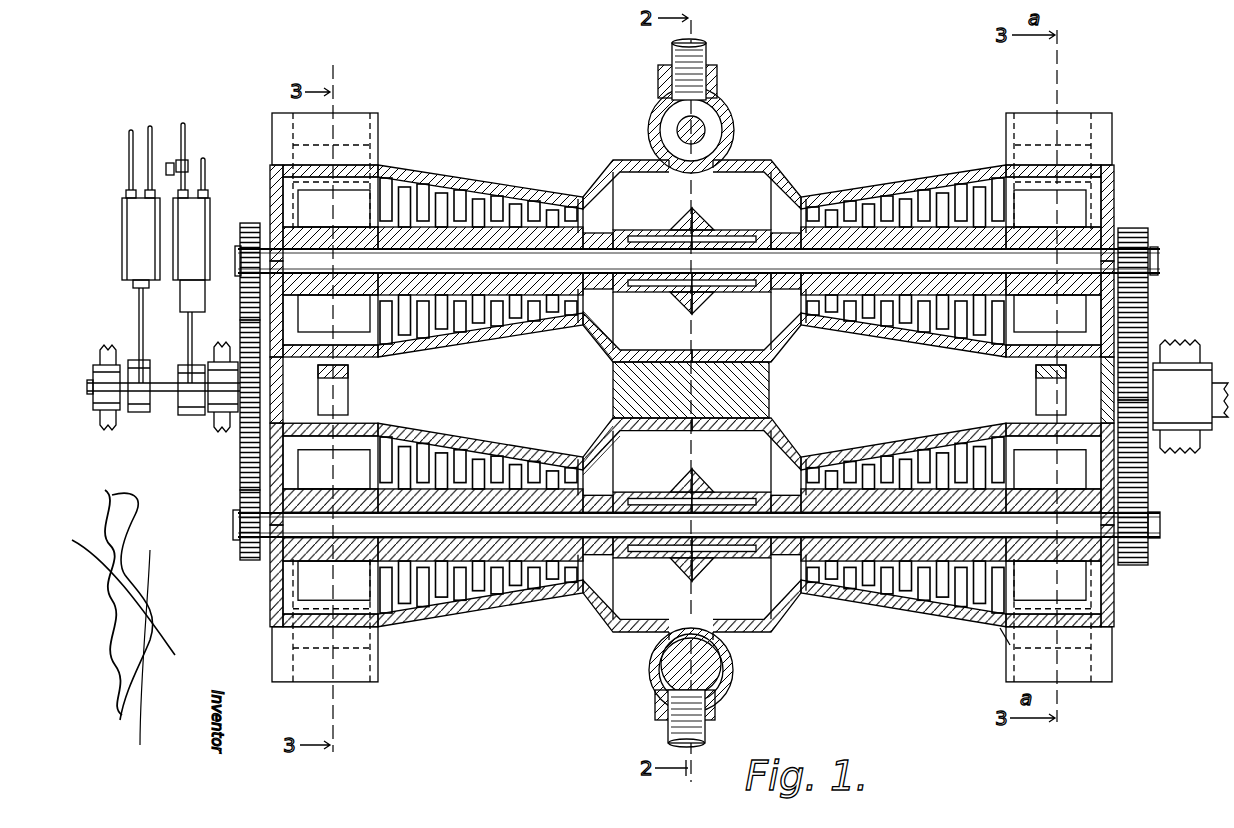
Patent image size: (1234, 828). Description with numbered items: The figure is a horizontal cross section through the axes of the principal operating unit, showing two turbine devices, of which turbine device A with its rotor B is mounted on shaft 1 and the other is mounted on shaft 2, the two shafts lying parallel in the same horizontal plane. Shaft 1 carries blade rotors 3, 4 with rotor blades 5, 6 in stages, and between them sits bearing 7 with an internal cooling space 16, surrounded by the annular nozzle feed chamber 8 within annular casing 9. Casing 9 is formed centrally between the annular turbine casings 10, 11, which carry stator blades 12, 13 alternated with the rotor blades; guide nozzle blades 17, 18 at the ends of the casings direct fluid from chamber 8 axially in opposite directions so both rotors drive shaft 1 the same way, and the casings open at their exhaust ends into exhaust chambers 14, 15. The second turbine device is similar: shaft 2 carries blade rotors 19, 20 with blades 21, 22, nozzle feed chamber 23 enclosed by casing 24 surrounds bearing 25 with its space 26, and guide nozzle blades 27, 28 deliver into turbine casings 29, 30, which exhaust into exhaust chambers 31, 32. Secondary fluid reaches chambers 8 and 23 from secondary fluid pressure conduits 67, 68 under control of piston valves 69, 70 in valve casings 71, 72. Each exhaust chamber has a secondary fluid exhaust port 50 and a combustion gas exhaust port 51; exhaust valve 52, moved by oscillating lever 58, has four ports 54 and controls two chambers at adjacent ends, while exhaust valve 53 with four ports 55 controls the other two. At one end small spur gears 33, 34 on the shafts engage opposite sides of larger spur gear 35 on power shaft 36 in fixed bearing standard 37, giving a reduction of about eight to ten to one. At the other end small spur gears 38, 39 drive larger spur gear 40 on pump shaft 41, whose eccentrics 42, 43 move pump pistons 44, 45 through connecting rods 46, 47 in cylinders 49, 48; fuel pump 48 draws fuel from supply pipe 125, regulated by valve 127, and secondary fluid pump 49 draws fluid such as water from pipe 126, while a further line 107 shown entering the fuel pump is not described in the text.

The shaft 1 is at (239, 258).
The shaft 2 is at (236, 525).
The blade rotor 3 is at (375, 227).
The blade rotor 4 is at (1000, 235).
The rotor blades 5 is at (590, 205).
The rotor blades 6 is at (800, 210).
The bearing 7 is at (700, 225).
The annular nozzle feed chamber 8 is at (692, 275).
The annular casing 9 is at (768, 160).
The annular turbine casing 10 is at (475, 180).
The annular turbine casing 11 is at (875, 185).
The stator blades 12 is at (530, 195).
The stator blades 13 is at (940, 185).
The exhaust chamber 14 is at (275, 185).
The exhaust chamber 15 is at (1030, 175).
The cooling space 16 is at (700, 310).
The guide nozzle blades 17 is at (614, 215).
The guide nozzle blades 18 is at (768, 190).
The blade rotor 19 is at (375, 490).
The blade rotor 20 is at (1010, 490).
The blades 21 is at (460, 450).
The blades 22 is at (880, 450).
The annular nozzle feed chamber 23 is at (692, 536).
The casing 24 is at (770, 622).
The bearing 25 is at (698, 580).
The space 26 is at (695, 485).
The guide nozzle blades 27 is at (614, 460).
The guide nozzle blades 28 is at (768, 455).
The annular turbine casing 29 is at (480, 615).
The annular turbine casing 30 is at (880, 610).
The exhaust chamber 31 is at (378, 628).
The exhaust chamber 32 is at (1000, 640).
The small spur gear 33 is at (1133, 228).
The small spur gear 34 is at (1135, 565).
The larger spur gear 35 is at (1175, 365).
The power shaft 36 is at (1216, 420).
The fixed bearing standard 37 is at (1170, 448).
The small spur gear 38 is at (250, 223).
The small spur gear 39 is at (251, 560).
The larger spur gear 40 is at (241, 440).
The pump shaft 41 is at (93, 388).
The eccentric 42 is at (148, 362).
The eccentric 43 is at (185, 415).
The pump piston 44 is at (135, 286).
The pump piston 45 is at (205, 305).
The connecting rod 46 is at (139, 320).
The connecting rod 47 is at (192, 345).
The fuel pump 48 is at (210, 215).
The secondary fluid pump 49 is at (128, 240).
The secondary fluid exhaust port 50 is at (300, 360).
The combustion gas exhaust port 51 is at (1070, 655).
The exhaust valve 52 is at (378, 113).
The exhaust valve 53 is at (1100, 113).
The port 54 is at (345, 160).
The port 55 is at (1075, 160).
The oscillating lever 58 is at (692, 386).
The secondary fluid pressure conduit 67 is at (708, 70).
The secondary fluid pressure conduit 68 is at (668, 725).
The piston valve 69 is at (705, 130).
The piston valve 70 is at (708, 682).
The valve casing 71 is at (726, 118).
The valve casing 72 is at (724, 650).
The rod 107 is at (204, 160).
The supply pipe 125 is at (186, 125).
The pipe 126 is at (129, 160).
The valve 127 is at (172, 163).
The turbine device A is at (1110, 170).
The rotor B is at (1153, 255).